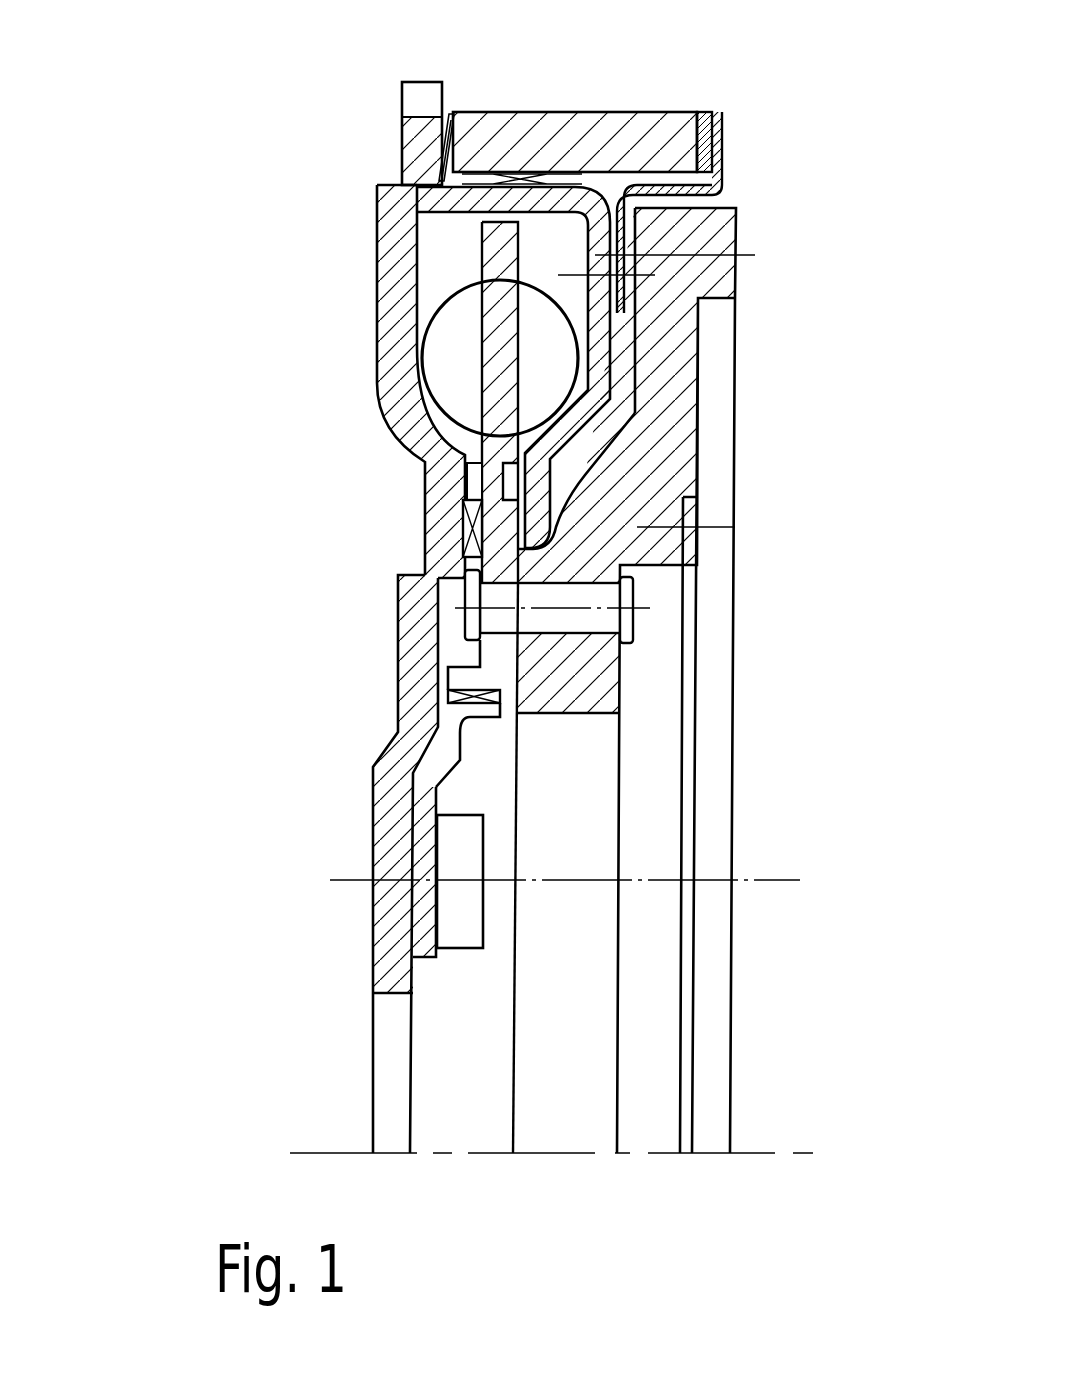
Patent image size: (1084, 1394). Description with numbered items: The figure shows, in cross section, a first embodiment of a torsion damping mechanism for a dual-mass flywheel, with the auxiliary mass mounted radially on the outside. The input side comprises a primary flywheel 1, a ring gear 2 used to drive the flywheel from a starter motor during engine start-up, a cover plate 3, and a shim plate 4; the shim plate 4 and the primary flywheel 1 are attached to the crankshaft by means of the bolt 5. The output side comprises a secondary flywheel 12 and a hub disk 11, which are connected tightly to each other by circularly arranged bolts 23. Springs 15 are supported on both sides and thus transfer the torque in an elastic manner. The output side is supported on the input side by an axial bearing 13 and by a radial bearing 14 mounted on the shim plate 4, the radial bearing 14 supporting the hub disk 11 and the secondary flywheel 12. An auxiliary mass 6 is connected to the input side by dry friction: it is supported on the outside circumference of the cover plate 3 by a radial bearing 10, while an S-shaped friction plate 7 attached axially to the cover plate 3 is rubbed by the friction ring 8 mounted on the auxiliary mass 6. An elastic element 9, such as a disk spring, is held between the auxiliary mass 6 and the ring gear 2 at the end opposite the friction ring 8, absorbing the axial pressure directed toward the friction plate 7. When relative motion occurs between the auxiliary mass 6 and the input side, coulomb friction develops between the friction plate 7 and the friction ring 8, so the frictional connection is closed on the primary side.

The primary flywheel 1 is at (392, 245).
The ring gear 2 is at (420, 148).
The cover plate 3 is at (440, 208).
The shim plate 4 is at (423, 787).
The bolt 5 is at (462, 920).
The auxiliary mass 6 is at (592, 132).
The friction plate 7 is at (720, 171).
The friction ring 8 is at (705, 130).
The elastic element 9 is at (458, 143).
The radial bearing 10 is at (524, 176).
The hub disk 11 is at (503, 552).
The secondary flywheel 12 is at (670, 365).
The axial bearing 13 is at (470, 516).
The radial bearing 14 is at (475, 696).
The springs 15 is at (445, 300).
The bolts 23 is at (580, 615).